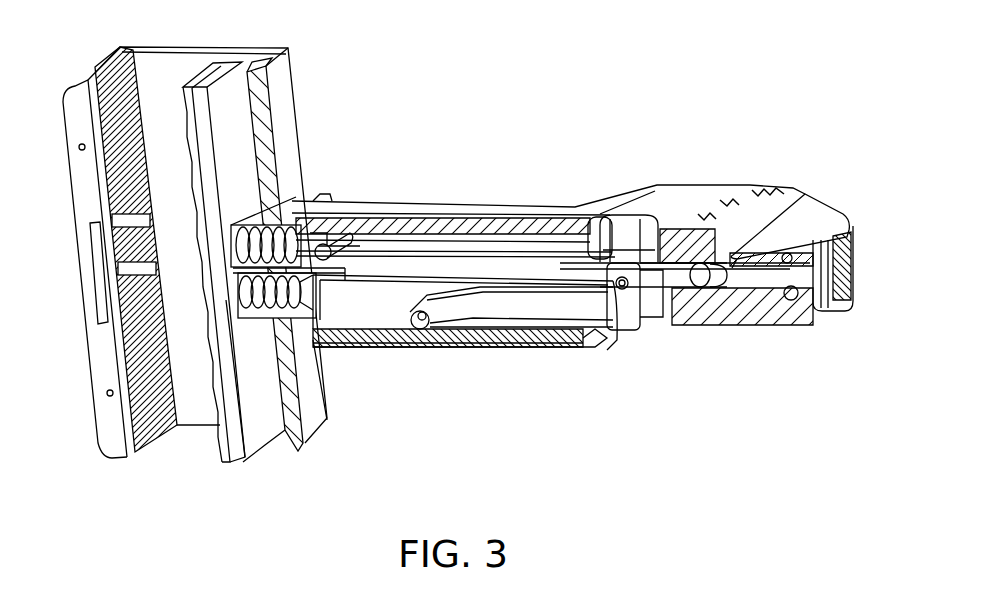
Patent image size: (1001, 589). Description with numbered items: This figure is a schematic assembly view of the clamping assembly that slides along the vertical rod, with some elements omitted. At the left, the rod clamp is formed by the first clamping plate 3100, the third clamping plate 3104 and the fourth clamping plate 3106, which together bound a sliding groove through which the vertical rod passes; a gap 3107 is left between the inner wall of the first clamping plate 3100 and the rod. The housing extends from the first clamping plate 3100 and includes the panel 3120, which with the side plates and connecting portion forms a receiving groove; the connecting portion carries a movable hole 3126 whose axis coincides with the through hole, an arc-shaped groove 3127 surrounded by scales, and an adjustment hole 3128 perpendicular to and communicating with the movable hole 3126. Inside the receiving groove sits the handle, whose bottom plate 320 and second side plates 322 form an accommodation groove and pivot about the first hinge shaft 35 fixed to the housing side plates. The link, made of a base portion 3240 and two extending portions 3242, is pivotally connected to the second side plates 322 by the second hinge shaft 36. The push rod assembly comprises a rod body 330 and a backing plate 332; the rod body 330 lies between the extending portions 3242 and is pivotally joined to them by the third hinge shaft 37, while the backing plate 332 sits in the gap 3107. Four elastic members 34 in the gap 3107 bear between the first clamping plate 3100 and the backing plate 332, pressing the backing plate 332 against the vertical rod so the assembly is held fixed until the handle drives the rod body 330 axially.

The first clamping plate 3100 is at (284, 78).
The third clamping plate 3104 is at (175, 63).
The fourth clamping plate 3106 is at (95, 68).
The gap 3107 is at (251, 52).
The panel 3120 is at (445, 210).
The movable hole 3126 is at (745, 277).
The arc-shaped groove 3127 is at (800, 215).
The adjustment hole 3128 is at (788, 264).
The bottom plate 320 is at (475, 330).
The second side plate 322 is at (337, 300).
The base portion 3240 is at (536, 300).
The extending portion 3242 is at (622, 305).
The rod body 330 is at (530, 267).
The backing plate 332 is at (235, 418).
The elastic member 34 is at (289, 237).
The first hinge shaft 35 is at (337, 242).
The second hinge shaft 36 is at (421, 329).
The third hinge shaft 37 is at (626, 287).